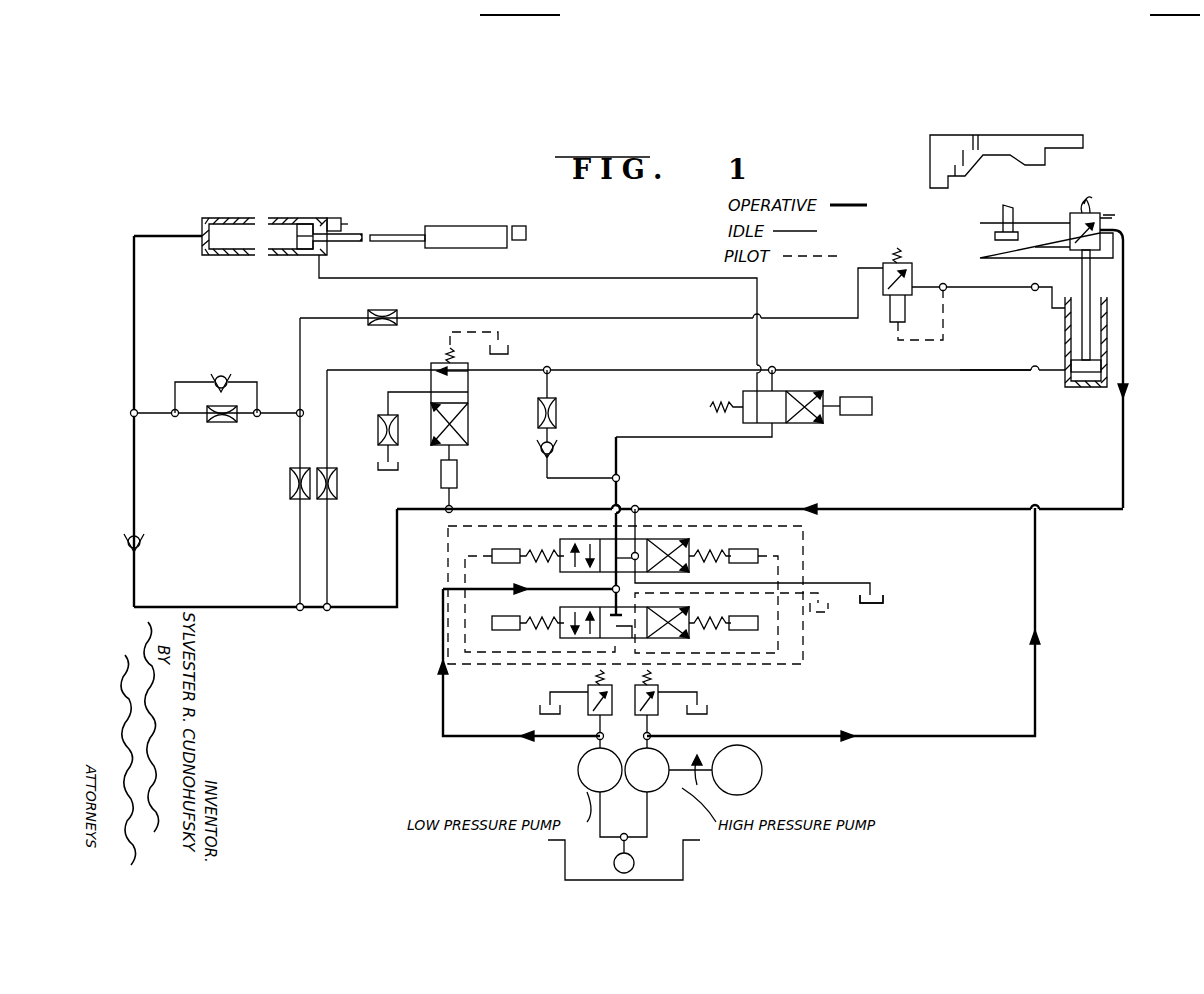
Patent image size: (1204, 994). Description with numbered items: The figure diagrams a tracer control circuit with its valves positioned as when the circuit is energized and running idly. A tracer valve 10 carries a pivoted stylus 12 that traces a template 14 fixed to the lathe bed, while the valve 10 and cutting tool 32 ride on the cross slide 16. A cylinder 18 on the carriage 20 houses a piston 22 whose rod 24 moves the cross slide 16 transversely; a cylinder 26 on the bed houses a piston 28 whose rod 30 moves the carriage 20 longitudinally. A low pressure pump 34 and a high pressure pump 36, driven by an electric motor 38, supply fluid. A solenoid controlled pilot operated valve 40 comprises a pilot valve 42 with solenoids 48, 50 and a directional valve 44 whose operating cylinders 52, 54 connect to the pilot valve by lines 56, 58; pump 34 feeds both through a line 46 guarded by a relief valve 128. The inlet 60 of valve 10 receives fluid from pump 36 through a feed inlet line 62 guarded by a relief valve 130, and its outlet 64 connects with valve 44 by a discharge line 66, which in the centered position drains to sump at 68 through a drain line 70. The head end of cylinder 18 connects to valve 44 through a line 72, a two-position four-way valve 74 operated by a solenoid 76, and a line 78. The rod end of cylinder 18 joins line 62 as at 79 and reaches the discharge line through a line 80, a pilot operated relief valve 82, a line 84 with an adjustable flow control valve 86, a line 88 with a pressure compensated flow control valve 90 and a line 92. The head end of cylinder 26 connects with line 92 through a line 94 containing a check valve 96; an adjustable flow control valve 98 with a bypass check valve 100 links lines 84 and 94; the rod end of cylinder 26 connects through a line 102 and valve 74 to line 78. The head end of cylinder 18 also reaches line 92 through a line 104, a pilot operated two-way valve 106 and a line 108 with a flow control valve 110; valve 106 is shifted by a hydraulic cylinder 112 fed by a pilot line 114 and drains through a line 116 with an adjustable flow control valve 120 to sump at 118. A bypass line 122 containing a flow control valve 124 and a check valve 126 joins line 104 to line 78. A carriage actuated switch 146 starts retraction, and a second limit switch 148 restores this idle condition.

The tracer valve 10 is at (1102, 214).
The stylus 12 is at (1086, 200).
The template 14 is at (1083, 140).
The cross slide 16 is at (978, 236).
The cylinder 18 is at (1108, 350).
The carriage 20 is at (455, 238).
The piston 22 is at (1105, 372).
The rod 24 is at (1088, 322).
The cylinder 26 is at (282, 255).
The piston 28 is at (306, 226).
The rod 30 is at (413, 236).
The cutting tool 32 is at (1010, 210).
The low pressure pump 34 is at (585, 782).
The high pressure pump 36 is at (662, 788).
The electric motor 38 is at (762, 782).
The solenoid controlled pilot operated valve 40 is at (812, 572).
The pilot valve 42 is at (690, 627).
The directional valve 44 is at (690, 550).
The line 46 is at (503, 738).
The solenoid 48 is at (505, 631).
The solenoid 50 is at (742, 631).
The operating cylinder 52 is at (512, 550).
The operating cylinder 54 is at (750, 550).
The line 56 is at (470, 620).
The line 58 is at (778, 643).
The inlet 60 is at (1070, 240).
The feed inlet line 62 is at (925, 736).
The outlet 64 is at (1125, 240).
The discharge line 66 is at (963, 508).
The sump 68 is at (880, 592).
The drain line 70 is at (710, 583).
The line 72 is at (1012, 375).
The two-position four-way valve 74 is at (815, 425).
The solenoid 76 is at (868, 416).
The line 78 is at (620, 478).
The connection 79 is at (1030, 286).
The line 80 is at (1018, 290).
The pilot operated relief valve 82 is at (913, 282).
The line 84 is at (638, 318).
The adjustable flow control valve 86 is at (385, 326).
The line 88 is at (298, 538).
The pressure compensated adjustable flow control valve 90 is at (290, 492).
The line 92 is at (400, 598).
The line 94 is at (137, 346).
The check valve 96 is at (142, 540).
The adjustable flow control valve 98 is at (224, 424).
The bypass check valve 100 is at (222, 374).
The line 102 is at (645, 278).
The line 104 is at (642, 358).
The pilot operated two-way valve 106 is at (468, 398).
The line 108 is at (327, 415).
The adjustable pressure compensated flow control valve 110 is at (337, 490).
The hydraulic cylinder 112 is at (457, 470).
The pilot line 114 is at (452, 500).
The line 116 is at (424, 392).
The sump 118 is at (392, 470).
The adjustable flow control valve 120 is at (398, 430).
The bypass line 122 is at (550, 388).
The adjustable flow control valve 124 is at (556, 412).
The check valve 126 is at (553, 444).
The relief valve 128 is at (590, 687).
The relief valve 130 is at (658, 687).
The switch 146 is at (336, 222).
The second limit switch 148 is at (526, 233).